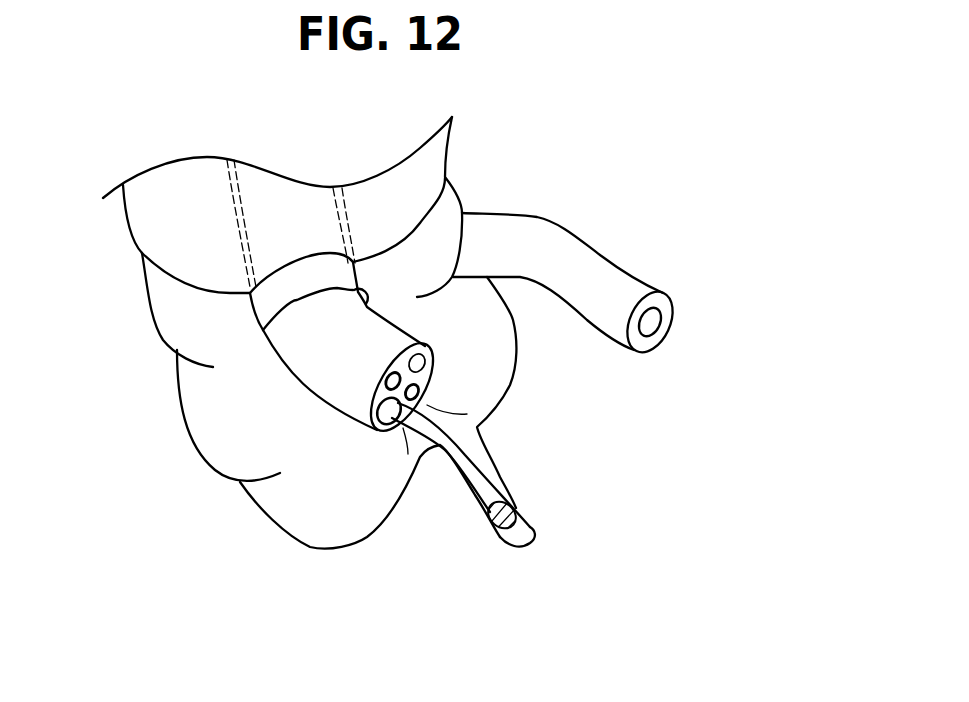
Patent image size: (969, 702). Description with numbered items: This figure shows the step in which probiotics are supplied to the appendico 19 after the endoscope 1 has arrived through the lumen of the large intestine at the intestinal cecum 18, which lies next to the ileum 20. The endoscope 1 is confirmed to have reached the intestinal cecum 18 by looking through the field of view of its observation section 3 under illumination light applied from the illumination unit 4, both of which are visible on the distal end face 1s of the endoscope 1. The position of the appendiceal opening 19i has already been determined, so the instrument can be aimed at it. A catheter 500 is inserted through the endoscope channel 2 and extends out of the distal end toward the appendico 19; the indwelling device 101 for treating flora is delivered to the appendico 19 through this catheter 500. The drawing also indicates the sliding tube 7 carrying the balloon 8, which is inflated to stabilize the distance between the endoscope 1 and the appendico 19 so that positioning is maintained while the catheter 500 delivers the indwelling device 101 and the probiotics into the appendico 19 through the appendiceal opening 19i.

The endoscope 1 is at (312, 352).
The distal end face 1s is at (424, 378).
The endoscope channel 2 is at (391, 427).
The observation section 3 is at (423, 362).
The illumination unit 4 is at (408, 402).
The sliding tube 7 is at (237, 227).
The balloon 8 is at (447, 165).
The intestinal cecum 18 is at (218, 433).
The appendico 19 is at (520, 527).
The appendiceal opening 19i is at (467, 437).
The ileum 20 is at (608, 283).
The indwelling device for treating flora 101 is at (494, 533).
The catheter 500 is at (447, 440).